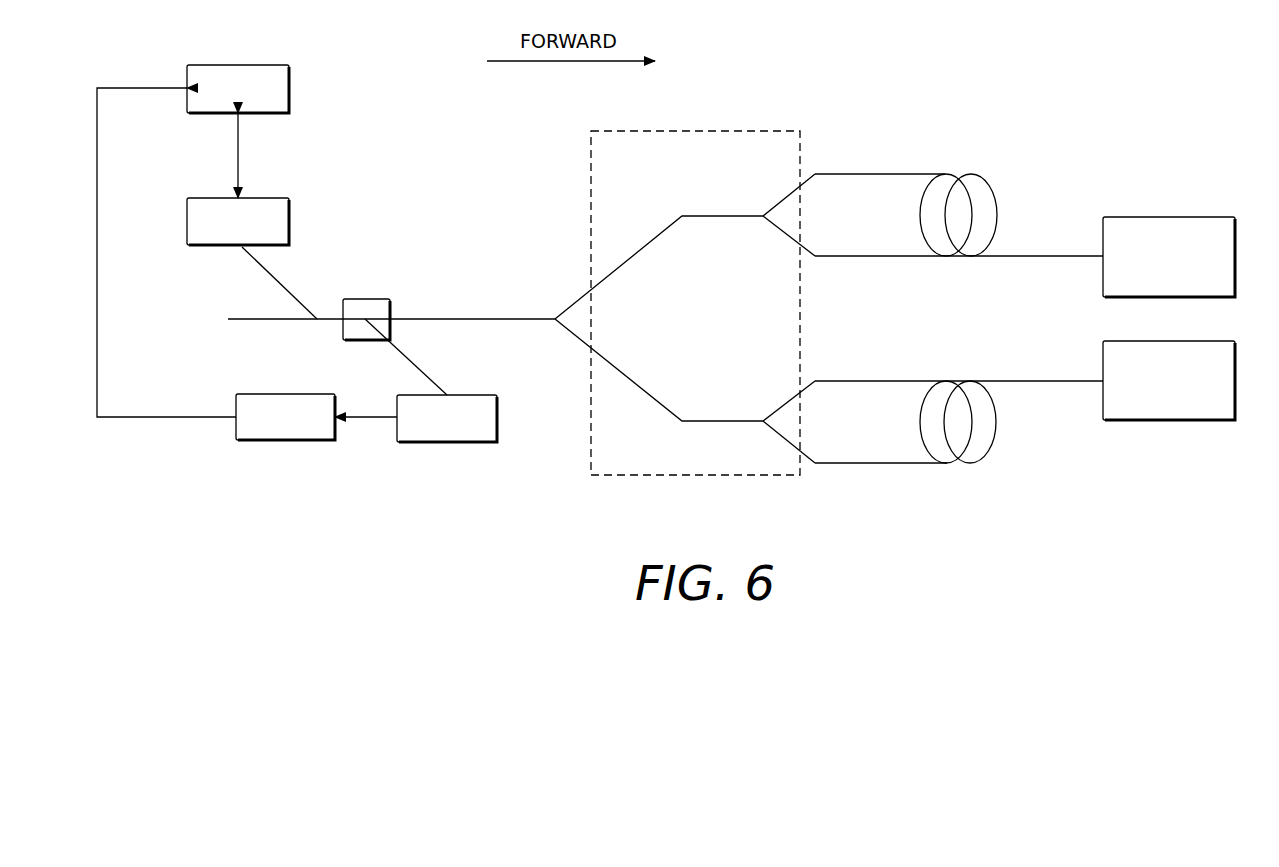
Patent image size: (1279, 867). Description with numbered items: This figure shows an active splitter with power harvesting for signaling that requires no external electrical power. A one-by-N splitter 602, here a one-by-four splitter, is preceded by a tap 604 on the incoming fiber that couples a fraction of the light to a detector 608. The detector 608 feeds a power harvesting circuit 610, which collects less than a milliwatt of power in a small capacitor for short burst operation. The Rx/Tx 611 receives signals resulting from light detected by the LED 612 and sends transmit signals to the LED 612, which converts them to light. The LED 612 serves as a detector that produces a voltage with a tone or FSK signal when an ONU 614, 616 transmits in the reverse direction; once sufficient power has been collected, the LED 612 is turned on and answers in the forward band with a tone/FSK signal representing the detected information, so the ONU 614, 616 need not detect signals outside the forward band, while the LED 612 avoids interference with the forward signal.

The 1×N splitter 602 is at (680, 312).
The tap 604 is at (375, 337).
The detector 608 is at (447, 443).
The power harvesting circuit 610 is at (285, 439).
The Rx/Tx 611 is at (222, 78).
The LED 612 is at (222, 210).
The ONU 614 is at (1186, 246).
The ONU 616 is at (1186, 369).